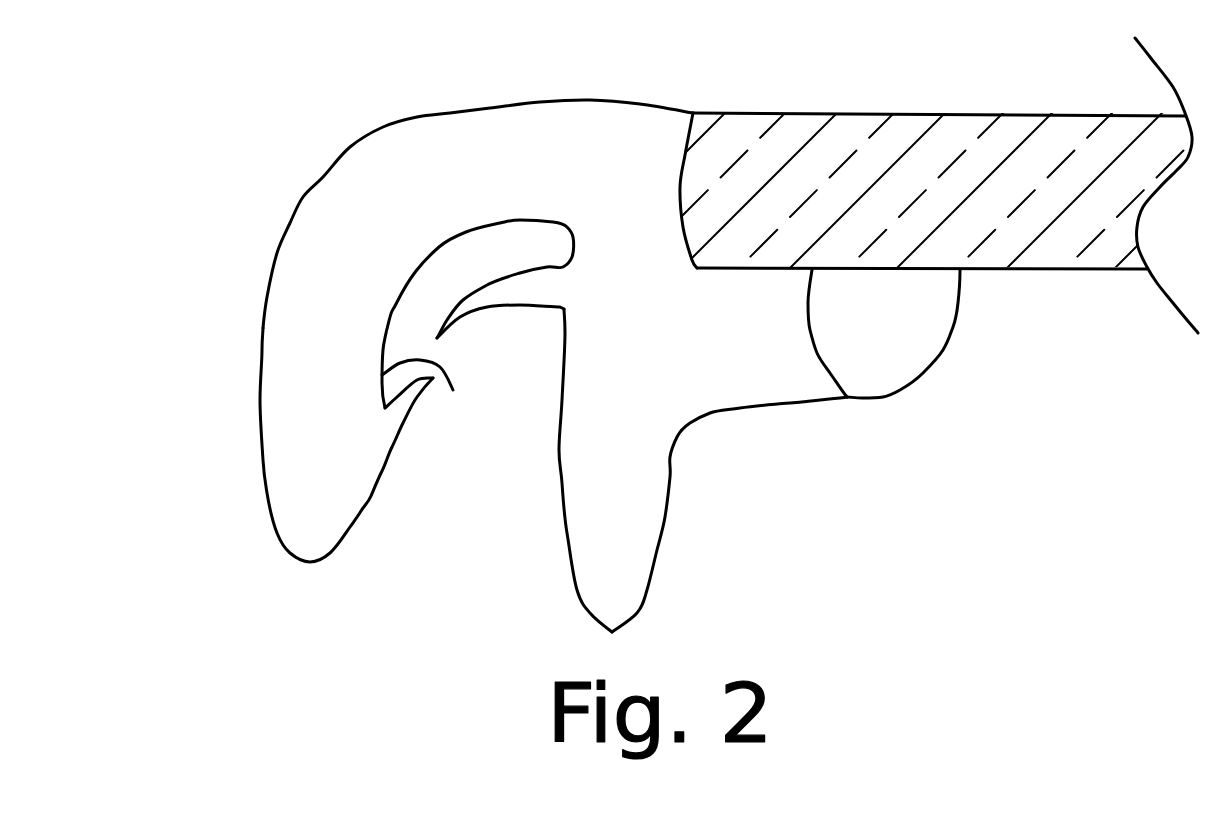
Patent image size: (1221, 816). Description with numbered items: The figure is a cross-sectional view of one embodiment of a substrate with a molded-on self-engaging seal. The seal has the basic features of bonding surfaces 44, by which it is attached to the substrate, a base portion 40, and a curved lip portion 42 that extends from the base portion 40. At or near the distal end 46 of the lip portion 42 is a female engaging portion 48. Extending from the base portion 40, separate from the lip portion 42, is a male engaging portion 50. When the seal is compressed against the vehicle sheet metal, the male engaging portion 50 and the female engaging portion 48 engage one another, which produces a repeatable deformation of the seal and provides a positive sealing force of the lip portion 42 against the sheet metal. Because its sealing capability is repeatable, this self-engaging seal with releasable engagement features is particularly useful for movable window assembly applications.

The base portion 40 is at (722, 390).
The curved lip portion 42 is at (302, 197).
The bonding surfaces 44 is at (685, 155).
The distal end 46 is at (267, 497).
The female engaging portion 48 is at (453, 390).
The male engaging portion 50 is at (470, 317).